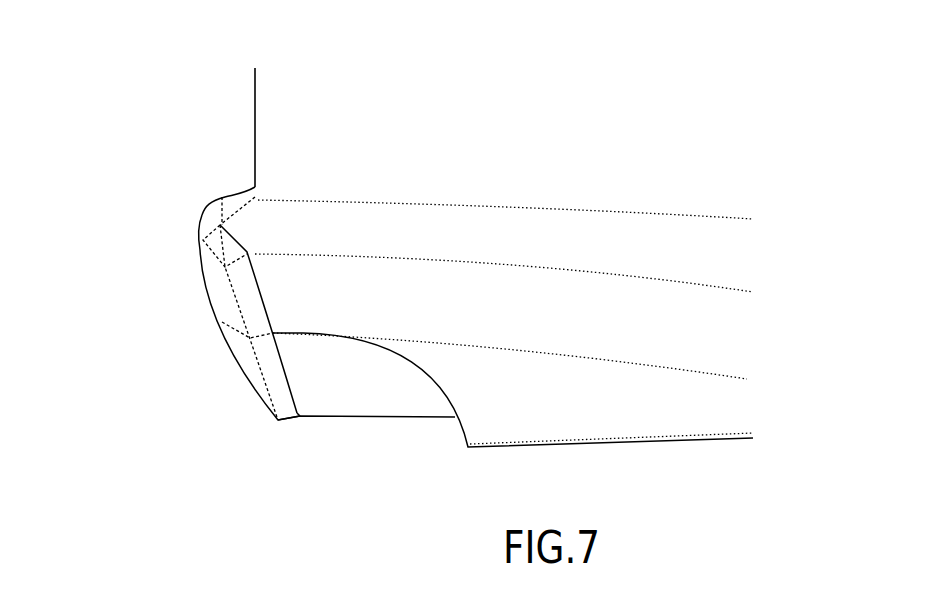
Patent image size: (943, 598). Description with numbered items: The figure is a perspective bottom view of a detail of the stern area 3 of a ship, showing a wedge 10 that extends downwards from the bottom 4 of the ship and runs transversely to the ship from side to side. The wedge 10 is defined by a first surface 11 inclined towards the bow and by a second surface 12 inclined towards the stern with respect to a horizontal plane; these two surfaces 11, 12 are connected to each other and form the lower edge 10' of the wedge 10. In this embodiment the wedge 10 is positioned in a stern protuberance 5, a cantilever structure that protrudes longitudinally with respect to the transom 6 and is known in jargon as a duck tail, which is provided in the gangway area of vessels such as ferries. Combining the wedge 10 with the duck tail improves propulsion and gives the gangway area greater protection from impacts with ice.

The stern area 3 is at (208, 130).
The bottom 4 is at (473, 317).
The stern protuberance 5 is at (195, 199).
The transom 6 is at (253, 98).
The wedge 10 is at (269, 341).
The lower edge 10' is at (242, 439).
The first surface 11 is at (283, 396).
The second surface 12 is at (227, 290).